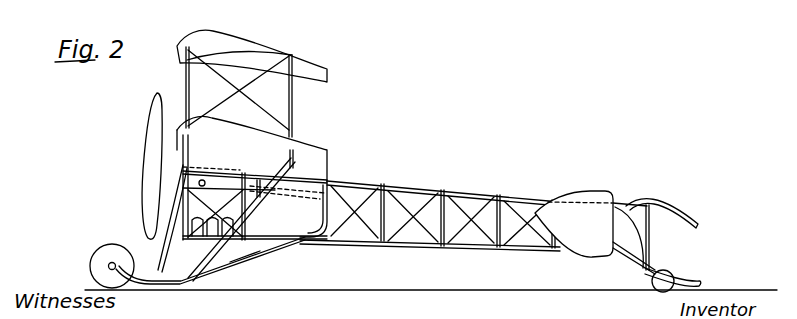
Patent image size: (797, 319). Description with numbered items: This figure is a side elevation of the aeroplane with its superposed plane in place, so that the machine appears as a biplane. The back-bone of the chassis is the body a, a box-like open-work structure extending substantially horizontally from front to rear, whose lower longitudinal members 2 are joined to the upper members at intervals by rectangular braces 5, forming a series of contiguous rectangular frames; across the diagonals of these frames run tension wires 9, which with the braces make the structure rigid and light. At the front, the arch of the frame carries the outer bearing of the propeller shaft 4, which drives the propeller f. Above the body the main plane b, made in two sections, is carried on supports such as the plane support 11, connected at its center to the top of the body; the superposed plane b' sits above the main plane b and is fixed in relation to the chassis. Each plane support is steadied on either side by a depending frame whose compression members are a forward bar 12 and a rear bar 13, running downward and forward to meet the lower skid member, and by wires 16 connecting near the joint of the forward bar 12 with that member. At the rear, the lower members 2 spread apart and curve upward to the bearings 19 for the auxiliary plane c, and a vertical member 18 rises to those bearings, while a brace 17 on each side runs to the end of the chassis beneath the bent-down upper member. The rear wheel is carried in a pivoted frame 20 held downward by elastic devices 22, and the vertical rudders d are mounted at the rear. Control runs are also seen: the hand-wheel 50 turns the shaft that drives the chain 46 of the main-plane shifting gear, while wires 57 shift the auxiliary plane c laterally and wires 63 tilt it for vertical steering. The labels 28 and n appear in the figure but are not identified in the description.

The superposed plane b' is at (252, 56).
The main plane b is at (252, 179).
The propeller f is at (148, 153).
The propeller shaft 4 is at (168, 188).
The wires or filamentous members 16 is at (290, 163).
The wires 63 is at (205, 178).
The top rail 28 is at (255, 159).
The bearings 19 is at (244, 174).
The hand-wheel 50 is at (270, 198).
The rear bar 13 is at (266, 206).
The wires 57 is at (212, 218).
The chain 46 is at (225, 213).
The wire 9 is at (107, 265).
The forward bar 12 is at (160, 240).
The auxiliary plane c is at (228, 257).
The plane support 11 is at (272, 256).
The body a is at (443, 187).
The lower longitudinal members 2 is at (395, 247).
The rectangular braces 5 is at (452, 194).
The vertical rudders d is at (574, 224).
The vertical member 18 is at (651, 236).
The brace 17 is at (636, 258).
The elastic devices 22 is at (650, 276).
The tail wheel n is at (661, 290).
The frame 20 is at (682, 280).